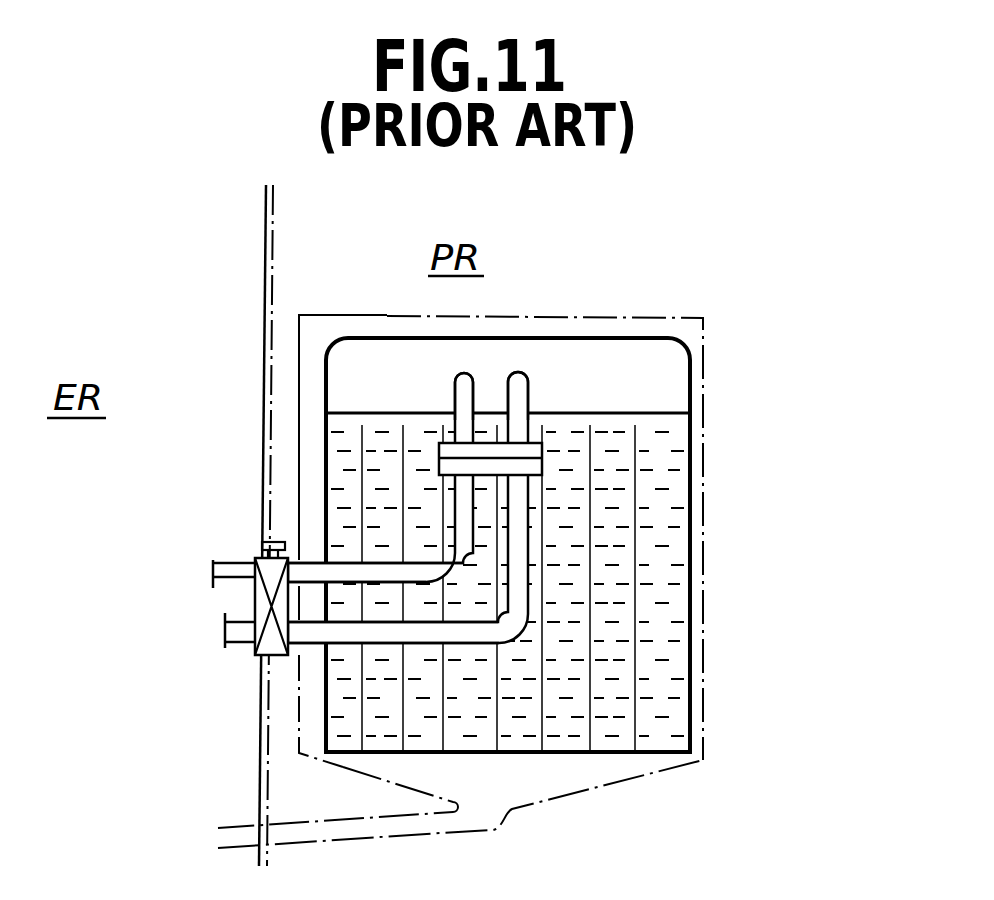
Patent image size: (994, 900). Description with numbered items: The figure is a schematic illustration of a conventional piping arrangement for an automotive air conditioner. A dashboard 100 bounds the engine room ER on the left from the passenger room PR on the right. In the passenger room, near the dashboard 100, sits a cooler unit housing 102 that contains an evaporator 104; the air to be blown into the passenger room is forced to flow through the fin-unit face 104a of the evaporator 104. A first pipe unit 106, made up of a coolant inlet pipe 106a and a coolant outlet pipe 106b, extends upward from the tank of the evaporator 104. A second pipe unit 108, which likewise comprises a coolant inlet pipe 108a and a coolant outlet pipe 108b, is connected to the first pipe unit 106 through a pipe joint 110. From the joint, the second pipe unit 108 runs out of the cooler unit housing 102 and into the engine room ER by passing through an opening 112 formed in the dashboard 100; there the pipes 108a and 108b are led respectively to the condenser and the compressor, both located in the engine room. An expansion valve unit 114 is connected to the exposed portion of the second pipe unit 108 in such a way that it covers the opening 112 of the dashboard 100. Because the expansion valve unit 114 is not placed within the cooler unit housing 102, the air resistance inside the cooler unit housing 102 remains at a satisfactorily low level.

The dashboard 100 is at (263, 372).
The cooler unit housing 102 is at (672, 318).
The evaporator 104 is at (655, 372).
The fin-unit face 104a is at (622, 650).
The first pipe unit 106 is at (538, 377).
The coolant inlet pipe 106a is at (530, 405).
The coolant outlet pipe 106b is at (457, 392).
The second pipe unit 108 is at (370, 564).
The coolant inlet pipe 108a is at (522, 572).
The coolant outlet pipe 108b is at (453, 520).
The pipe joint 110 is at (542, 463).
The opening 112 is at (252, 650).
The expansion valve unit 114 is at (256, 600).